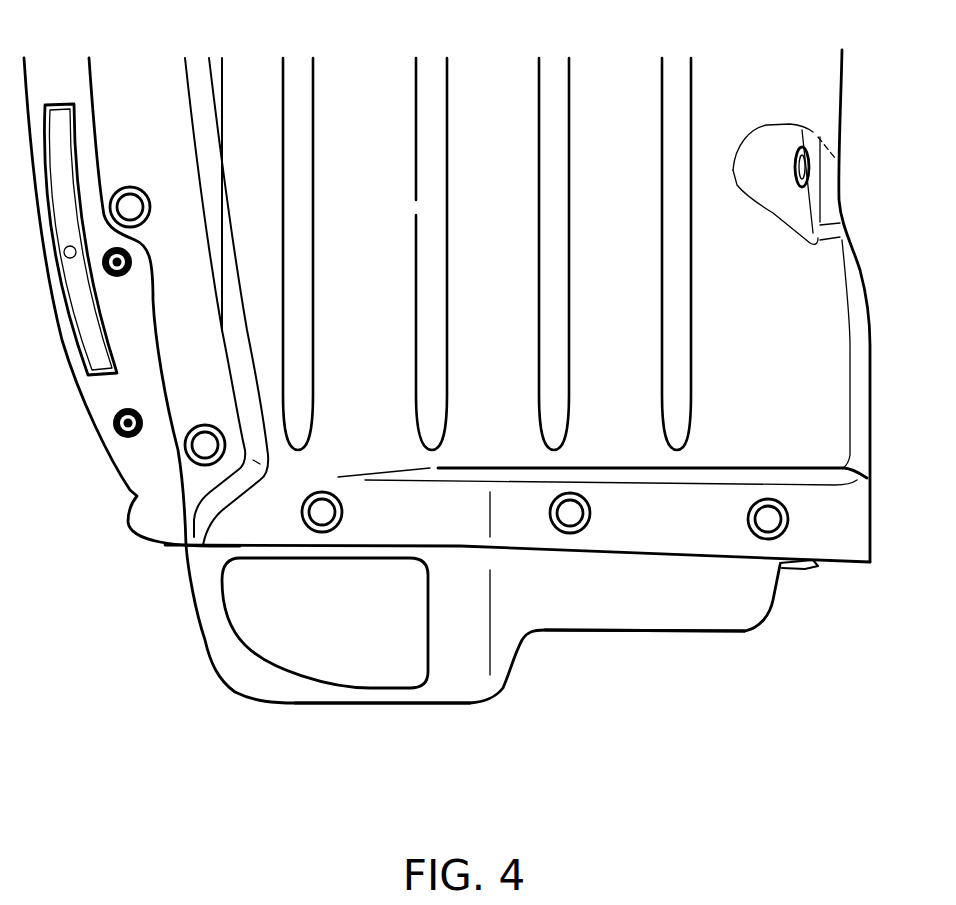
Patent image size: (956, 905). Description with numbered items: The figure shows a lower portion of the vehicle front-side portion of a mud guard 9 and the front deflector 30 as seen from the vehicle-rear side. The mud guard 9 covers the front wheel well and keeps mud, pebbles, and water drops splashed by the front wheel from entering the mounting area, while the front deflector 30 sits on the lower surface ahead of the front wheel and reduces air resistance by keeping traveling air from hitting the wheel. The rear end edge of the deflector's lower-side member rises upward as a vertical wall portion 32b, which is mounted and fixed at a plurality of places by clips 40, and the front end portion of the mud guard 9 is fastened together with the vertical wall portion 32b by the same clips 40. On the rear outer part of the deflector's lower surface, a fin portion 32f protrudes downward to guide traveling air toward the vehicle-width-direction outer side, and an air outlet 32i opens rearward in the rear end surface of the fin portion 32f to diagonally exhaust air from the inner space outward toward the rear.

The mud guard 9 is at (487, 98).
The front deflector 30 is at (665, 633).
The vertical wall portion 32b is at (590, 598).
The fin portion 32f is at (333, 706).
The air outlet 32i is at (268, 606).
The clip 40 is at (322, 512).